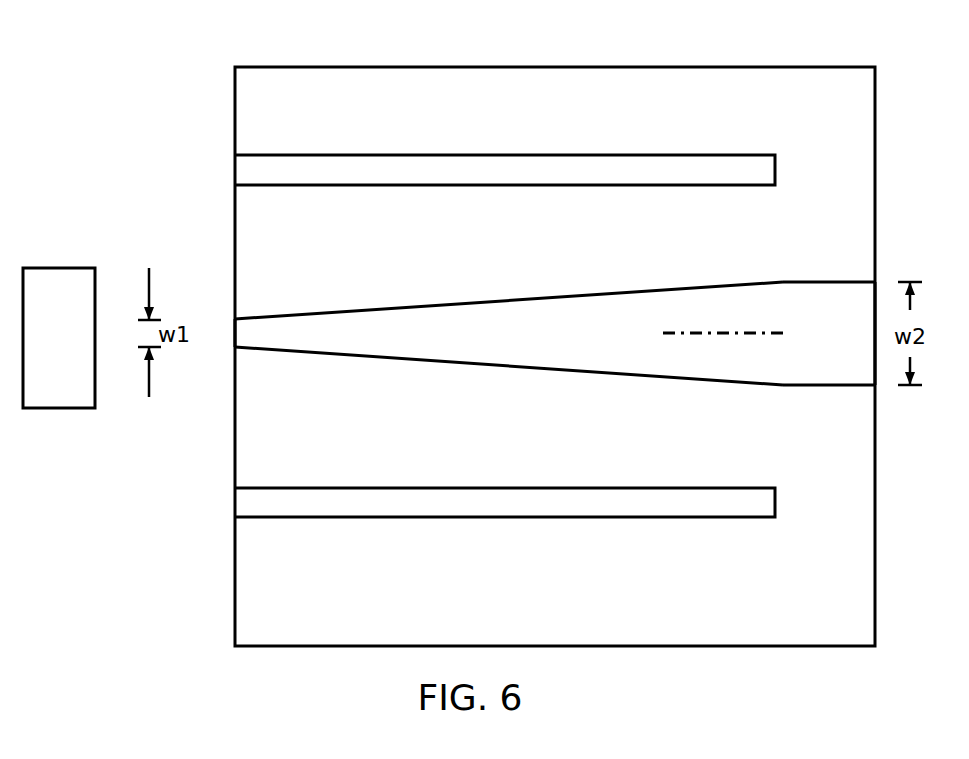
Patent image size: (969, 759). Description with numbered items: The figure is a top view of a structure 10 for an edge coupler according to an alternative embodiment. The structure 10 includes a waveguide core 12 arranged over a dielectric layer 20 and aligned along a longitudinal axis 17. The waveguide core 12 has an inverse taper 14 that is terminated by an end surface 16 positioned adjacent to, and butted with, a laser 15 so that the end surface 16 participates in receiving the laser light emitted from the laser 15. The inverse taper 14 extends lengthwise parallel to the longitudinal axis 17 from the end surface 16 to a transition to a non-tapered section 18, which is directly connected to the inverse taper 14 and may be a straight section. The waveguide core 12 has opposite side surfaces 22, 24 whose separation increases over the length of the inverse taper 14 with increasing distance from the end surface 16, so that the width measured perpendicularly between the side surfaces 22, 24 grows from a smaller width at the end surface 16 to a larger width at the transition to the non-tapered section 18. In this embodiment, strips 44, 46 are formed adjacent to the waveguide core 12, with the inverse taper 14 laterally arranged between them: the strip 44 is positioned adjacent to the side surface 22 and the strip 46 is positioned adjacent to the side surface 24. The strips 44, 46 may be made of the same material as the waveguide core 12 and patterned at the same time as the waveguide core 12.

The structure 10 is at (175, 145).
The waveguide core 12 is at (510, 295).
The inverse taper 14 is at (620, 347).
The laser 15 is at (68, 288).
The end surface 16 is at (235, 332).
The longitudinal axis 17 is at (727, 335).
The non-tapered section 18 is at (847, 308).
The dielectric layer 20 is at (367, 613).
The side surface 22 is at (415, 305).
The side surface 24 is at (408, 362).
The strip 44 is at (523, 167).
The strip 46 is at (528, 503).